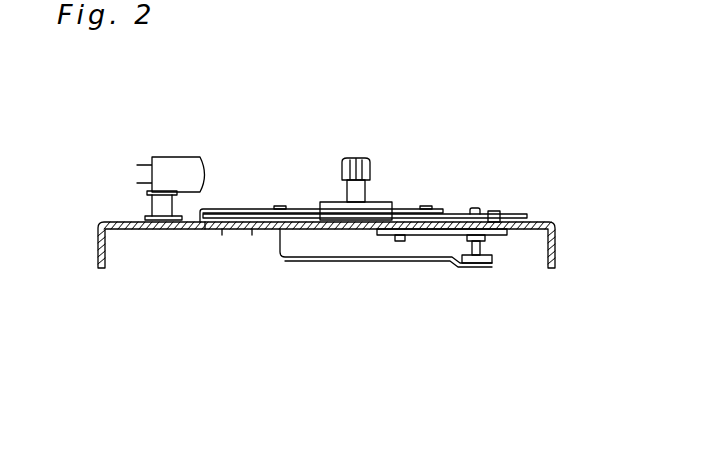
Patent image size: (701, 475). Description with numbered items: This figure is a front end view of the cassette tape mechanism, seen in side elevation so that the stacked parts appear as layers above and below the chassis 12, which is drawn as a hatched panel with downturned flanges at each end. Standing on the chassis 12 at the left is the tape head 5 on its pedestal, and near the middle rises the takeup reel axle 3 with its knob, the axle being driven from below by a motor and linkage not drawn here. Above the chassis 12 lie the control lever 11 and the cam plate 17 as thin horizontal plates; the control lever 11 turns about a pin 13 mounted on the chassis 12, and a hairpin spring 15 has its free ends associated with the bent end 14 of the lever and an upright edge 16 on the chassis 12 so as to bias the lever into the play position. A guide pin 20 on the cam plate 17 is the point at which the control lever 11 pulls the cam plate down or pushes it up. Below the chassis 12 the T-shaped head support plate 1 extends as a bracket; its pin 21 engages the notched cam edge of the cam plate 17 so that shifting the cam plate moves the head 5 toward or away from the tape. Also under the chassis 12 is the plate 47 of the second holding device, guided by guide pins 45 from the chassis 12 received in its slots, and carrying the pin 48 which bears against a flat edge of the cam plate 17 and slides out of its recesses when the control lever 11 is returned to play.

The T-shaped head support plate 1 is at (315, 258).
The takeup reel axle 3 is at (367, 158).
The tape head 5 is at (176, 157).
The control lever 11 is at (233, 209).
The chassis 12 is at (100, 245).
The pin 13 is at (280, 206).
The bent end 14 is at (205, 229).
The hairpin spring 15 is at (252, 229).
The upright edge 16 is at (222, 229).
The cam plate 17 is at (527, 213).
The guide pin 20 is at (425, 206).
The pin 21 is at (478, 258).
The guide pins 45 is at (400, 241).
The plate 47 is at (438, 235).
The pin 48 is at (494, 211).